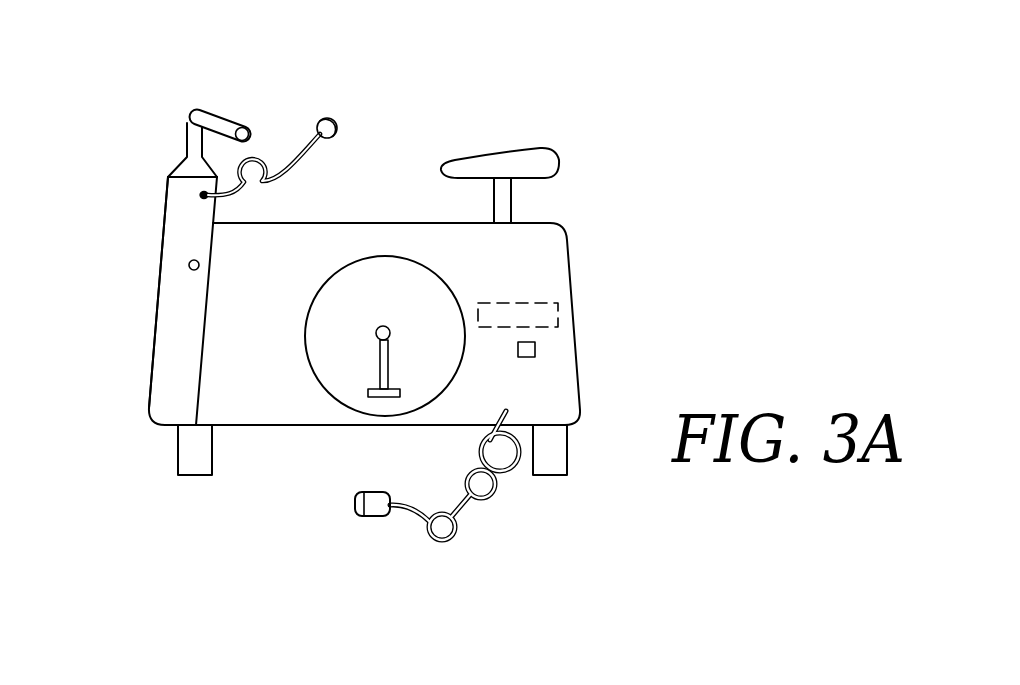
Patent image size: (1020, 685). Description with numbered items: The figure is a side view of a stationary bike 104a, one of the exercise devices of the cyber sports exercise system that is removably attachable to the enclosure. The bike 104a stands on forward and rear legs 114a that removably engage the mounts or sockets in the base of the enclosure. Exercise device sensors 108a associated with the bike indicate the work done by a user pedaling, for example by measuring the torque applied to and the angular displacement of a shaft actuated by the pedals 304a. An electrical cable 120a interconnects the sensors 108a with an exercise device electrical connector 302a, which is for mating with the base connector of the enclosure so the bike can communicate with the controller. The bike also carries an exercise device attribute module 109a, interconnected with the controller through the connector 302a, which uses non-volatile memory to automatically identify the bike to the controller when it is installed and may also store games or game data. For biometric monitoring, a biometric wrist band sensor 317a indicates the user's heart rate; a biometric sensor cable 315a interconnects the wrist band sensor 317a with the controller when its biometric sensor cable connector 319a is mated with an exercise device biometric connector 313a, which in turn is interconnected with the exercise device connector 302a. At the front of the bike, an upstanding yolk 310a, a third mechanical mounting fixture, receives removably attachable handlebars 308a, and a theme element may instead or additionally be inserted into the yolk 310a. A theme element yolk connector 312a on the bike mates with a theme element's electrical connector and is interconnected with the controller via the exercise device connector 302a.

The stationary bike 104a is at (592, 207).
The exercise device sensors 108a is at (515, 303).
The exercise device attribute module 109a is at (530, 346).
The forward and rear legs 114a is at (182, 455).
The electrical cable 120a is at (477, 462).
The exercise device electrical connector 302a is at (355, 494).
The pedals 304a is at (386, 326).
The handlebars 308a is at (237, 118).
The upstanding yolk 310a is at (183, 149).
The theme element yolk connector 312a is at (191, 269).
The exercise device biometric connector 313a is at (205, 199).
The biometric sensor cable 315a is at (298, 154).
The biometric wrist band sensor 317a is at (337, 134).
The biometric sensor cable connector 319a is at (202, 194).